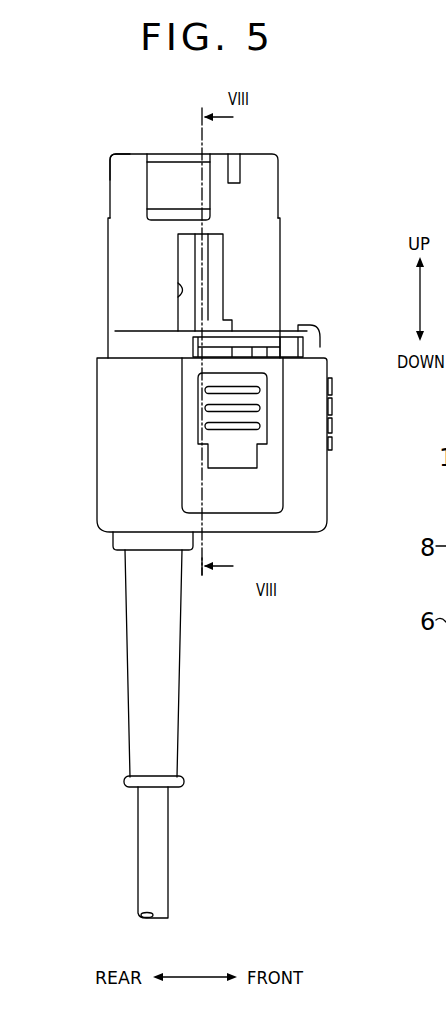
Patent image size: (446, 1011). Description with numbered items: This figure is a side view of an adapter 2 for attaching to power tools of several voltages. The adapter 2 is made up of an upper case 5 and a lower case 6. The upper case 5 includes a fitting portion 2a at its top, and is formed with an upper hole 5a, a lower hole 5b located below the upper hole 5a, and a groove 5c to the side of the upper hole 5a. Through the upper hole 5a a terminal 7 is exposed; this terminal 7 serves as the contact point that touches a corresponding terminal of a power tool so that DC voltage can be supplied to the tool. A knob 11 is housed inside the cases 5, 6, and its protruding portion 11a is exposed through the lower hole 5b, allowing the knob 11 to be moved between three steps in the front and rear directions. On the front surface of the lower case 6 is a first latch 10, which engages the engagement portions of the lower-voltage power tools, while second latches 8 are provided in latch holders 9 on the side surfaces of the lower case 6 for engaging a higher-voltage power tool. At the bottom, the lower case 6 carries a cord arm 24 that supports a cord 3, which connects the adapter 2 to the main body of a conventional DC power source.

The adapter 2 is at (108, 262).
The fitting portion 2a is at (120, 168).
The cord 3 is at (168, 843).
The upper case 5 is at (279, 196).
The upper hole 5a is at (163, 172).
The lower hole 5b is at (178, 300).
The groove 5c is at (235, 167).
The lower case 6 is at (97, 495).
The terminal 7 is at (183, 172).
The second latch 8 is at (205, 391).
The latch holder 9 is at (183, 443).
The first latch 10 is at (316, 333).
The knob 11 is at (225, 243).
The protruding portion 11a is at (200, 283).
The cord arm 24 is at (179, 700).